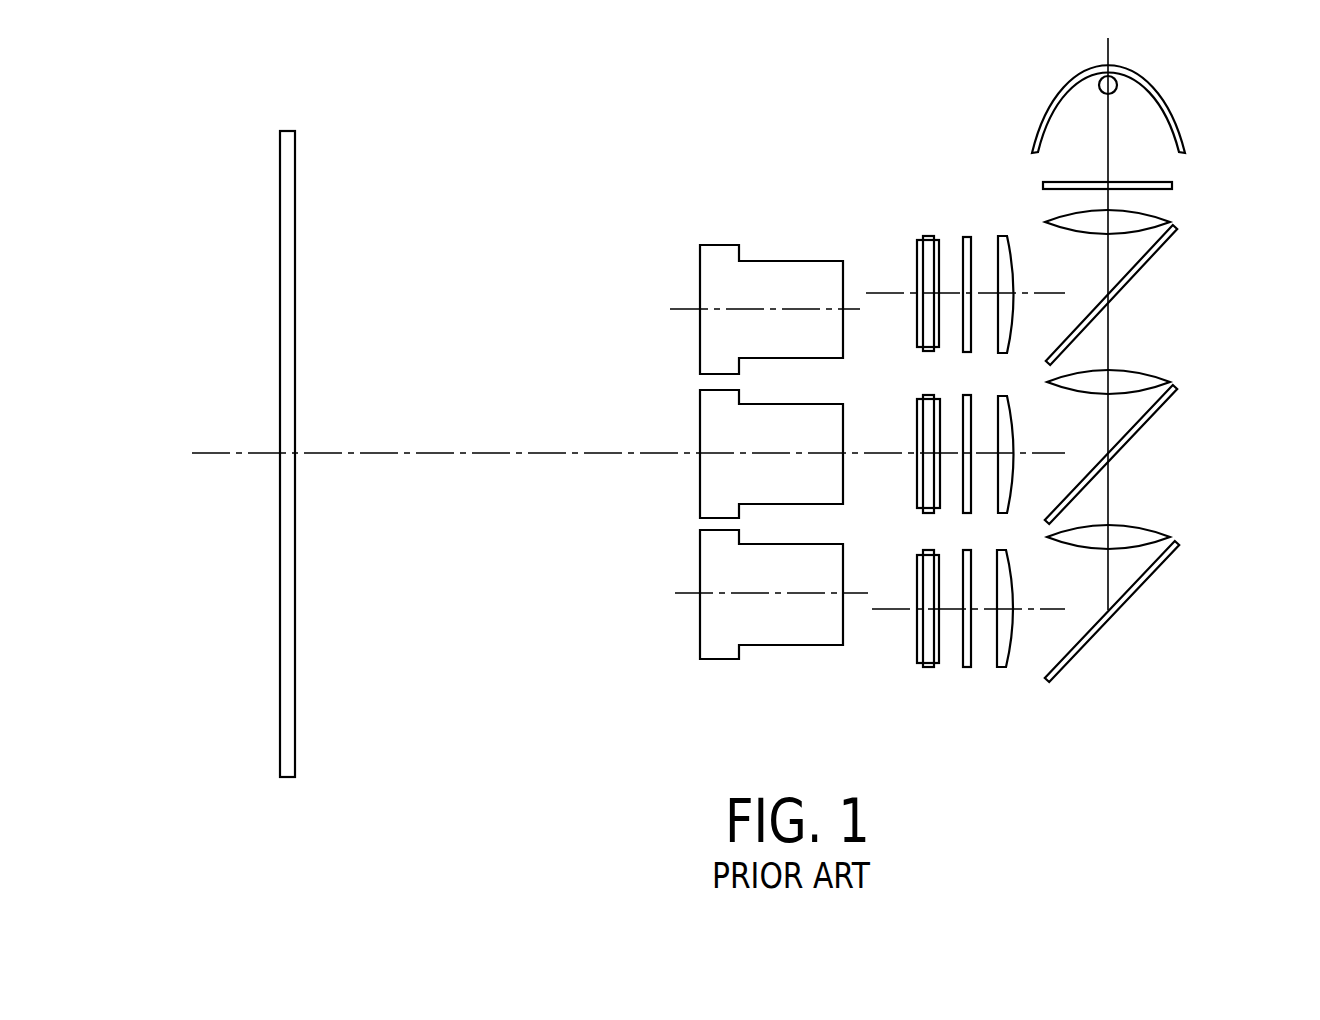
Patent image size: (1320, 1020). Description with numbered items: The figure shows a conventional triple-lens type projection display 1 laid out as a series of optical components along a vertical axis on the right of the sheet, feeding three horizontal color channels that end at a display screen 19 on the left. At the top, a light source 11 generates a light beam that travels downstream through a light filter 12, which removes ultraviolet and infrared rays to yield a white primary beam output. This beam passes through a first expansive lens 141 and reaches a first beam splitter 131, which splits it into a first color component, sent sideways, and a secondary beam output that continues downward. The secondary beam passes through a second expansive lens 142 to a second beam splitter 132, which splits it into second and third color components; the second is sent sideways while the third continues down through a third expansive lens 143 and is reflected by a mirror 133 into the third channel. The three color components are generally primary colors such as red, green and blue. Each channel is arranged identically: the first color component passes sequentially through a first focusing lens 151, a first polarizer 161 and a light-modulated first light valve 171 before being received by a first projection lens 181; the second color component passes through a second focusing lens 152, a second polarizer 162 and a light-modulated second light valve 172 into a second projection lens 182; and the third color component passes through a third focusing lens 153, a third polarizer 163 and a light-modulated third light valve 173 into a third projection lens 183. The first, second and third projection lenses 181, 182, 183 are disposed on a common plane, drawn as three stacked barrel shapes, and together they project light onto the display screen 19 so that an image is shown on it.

The triple-lens type projection display 1 is at (842, 190).
The light source 11 is at (1157, 100).
The light filter 12 is at (1168, 186).
The display screen 19 is at (287, 189).
The first beam splitter 131 is at (1150, 264).
The second beam splitter 132 is at (1138, 427).
The mirror 133 is at (1135, 592).
The first expansive lens 141 is at (1130, 216).
The second expansive lens 142 is at (1125, 378).
The third expansive lens 143 is at (1128, 530).
The first focusing lens 151 is at (1006, 236).
The second focusing lens 152 is at (1007, 435).
The third focusing lens 153 is at (1003, 655).
The first polarizer 161 is at (967, 237).
The second polarizer 162 is at (966, 396).
The third polarizer 163 is at (966, 668).
The first light valve 171 is at (924, 238).
The second light valve 172 is at (928, 418).
The third light valve 173 is at (928, 668).
The first projection lens 181 is at (700, 268).
The second projection lens 182 is at (700, 428).
The third projection lens 183 is at (703, 577).